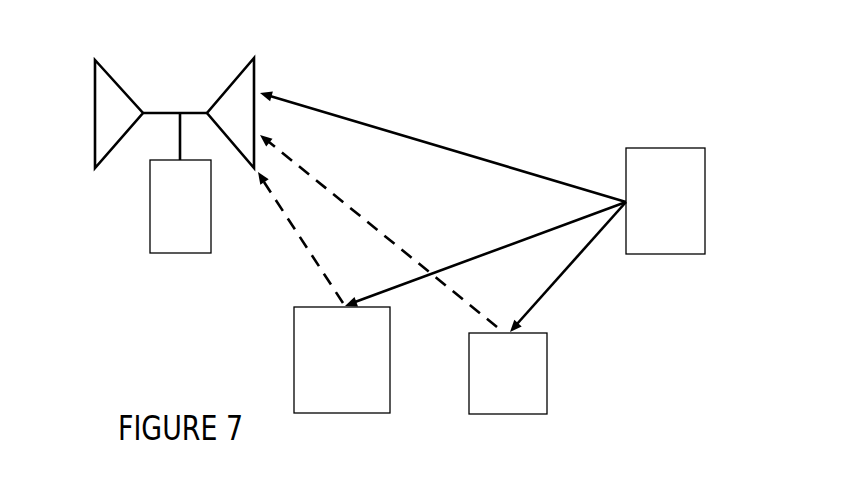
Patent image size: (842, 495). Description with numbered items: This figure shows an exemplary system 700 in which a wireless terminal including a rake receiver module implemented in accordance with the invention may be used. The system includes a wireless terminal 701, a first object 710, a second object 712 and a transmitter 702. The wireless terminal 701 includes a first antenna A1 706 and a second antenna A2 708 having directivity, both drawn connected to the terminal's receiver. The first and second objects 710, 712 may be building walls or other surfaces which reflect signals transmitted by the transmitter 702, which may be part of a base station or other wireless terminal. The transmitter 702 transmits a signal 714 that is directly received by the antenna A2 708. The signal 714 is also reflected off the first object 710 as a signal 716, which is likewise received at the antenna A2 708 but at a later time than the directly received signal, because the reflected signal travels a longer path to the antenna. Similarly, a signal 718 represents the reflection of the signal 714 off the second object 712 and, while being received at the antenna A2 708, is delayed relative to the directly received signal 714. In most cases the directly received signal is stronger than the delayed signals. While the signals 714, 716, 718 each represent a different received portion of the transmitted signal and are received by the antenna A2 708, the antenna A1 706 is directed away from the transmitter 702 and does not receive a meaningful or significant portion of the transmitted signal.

The system 700 is at (72, 11).
The wireless terminal 701 is at (150, 207).
The transmitter 702 is at (662, 147).
The first antenna A1 706 is at (111, 76).
The second antenna A2 708 is at (255, 62).
The first object 710 is at (548, 353).
The second object 712 is at (390, 358).
The signal 714 is at (441, 147).
The signal 716 is at (379, 225).
The signal 718 is at (308, 254).